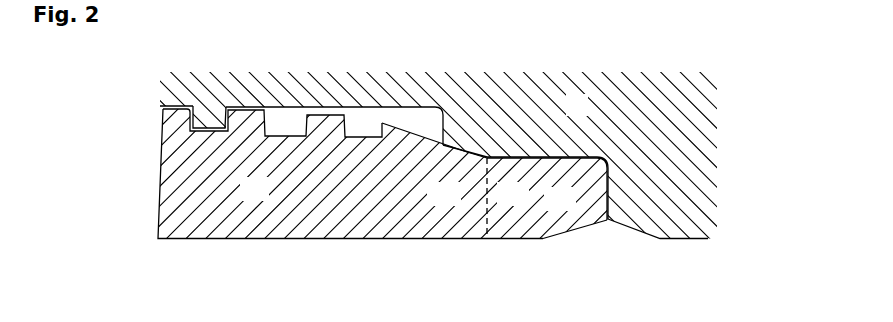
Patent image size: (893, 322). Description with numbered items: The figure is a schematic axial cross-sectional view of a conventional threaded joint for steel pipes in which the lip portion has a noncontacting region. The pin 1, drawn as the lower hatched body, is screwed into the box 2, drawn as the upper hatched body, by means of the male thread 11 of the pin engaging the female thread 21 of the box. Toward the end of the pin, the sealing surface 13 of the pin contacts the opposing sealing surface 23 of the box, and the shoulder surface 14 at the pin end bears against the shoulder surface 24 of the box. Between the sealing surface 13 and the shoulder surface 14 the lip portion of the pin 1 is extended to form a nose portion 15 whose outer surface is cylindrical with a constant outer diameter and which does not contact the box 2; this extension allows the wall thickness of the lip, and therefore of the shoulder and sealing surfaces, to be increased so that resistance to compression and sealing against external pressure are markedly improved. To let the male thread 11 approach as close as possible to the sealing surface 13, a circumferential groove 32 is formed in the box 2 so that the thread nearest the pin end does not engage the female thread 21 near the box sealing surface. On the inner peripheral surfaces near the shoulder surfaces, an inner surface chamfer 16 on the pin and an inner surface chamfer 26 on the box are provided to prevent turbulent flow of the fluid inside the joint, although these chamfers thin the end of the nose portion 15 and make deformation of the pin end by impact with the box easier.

The pin 1 is at (262, 227).
The box 2 is at (446, 155).
The male thread 11 is at (243, 120).
The sealing surface 13 is at (456, 160).
The shoulder surface 14 is at (607, 196).
The nose portion 15 is at (542, 198).
The inner surface chamfer 16 is at (558, 232).
The female thread 21 is at (207, 118).
The sealing surface 23 is at (467, 152).
The shoulder surface 24 is at (607, 185).
The inner surface chamfer 26 is at (643, 232).
The circumferential groove in box 32 is at (367, 114).